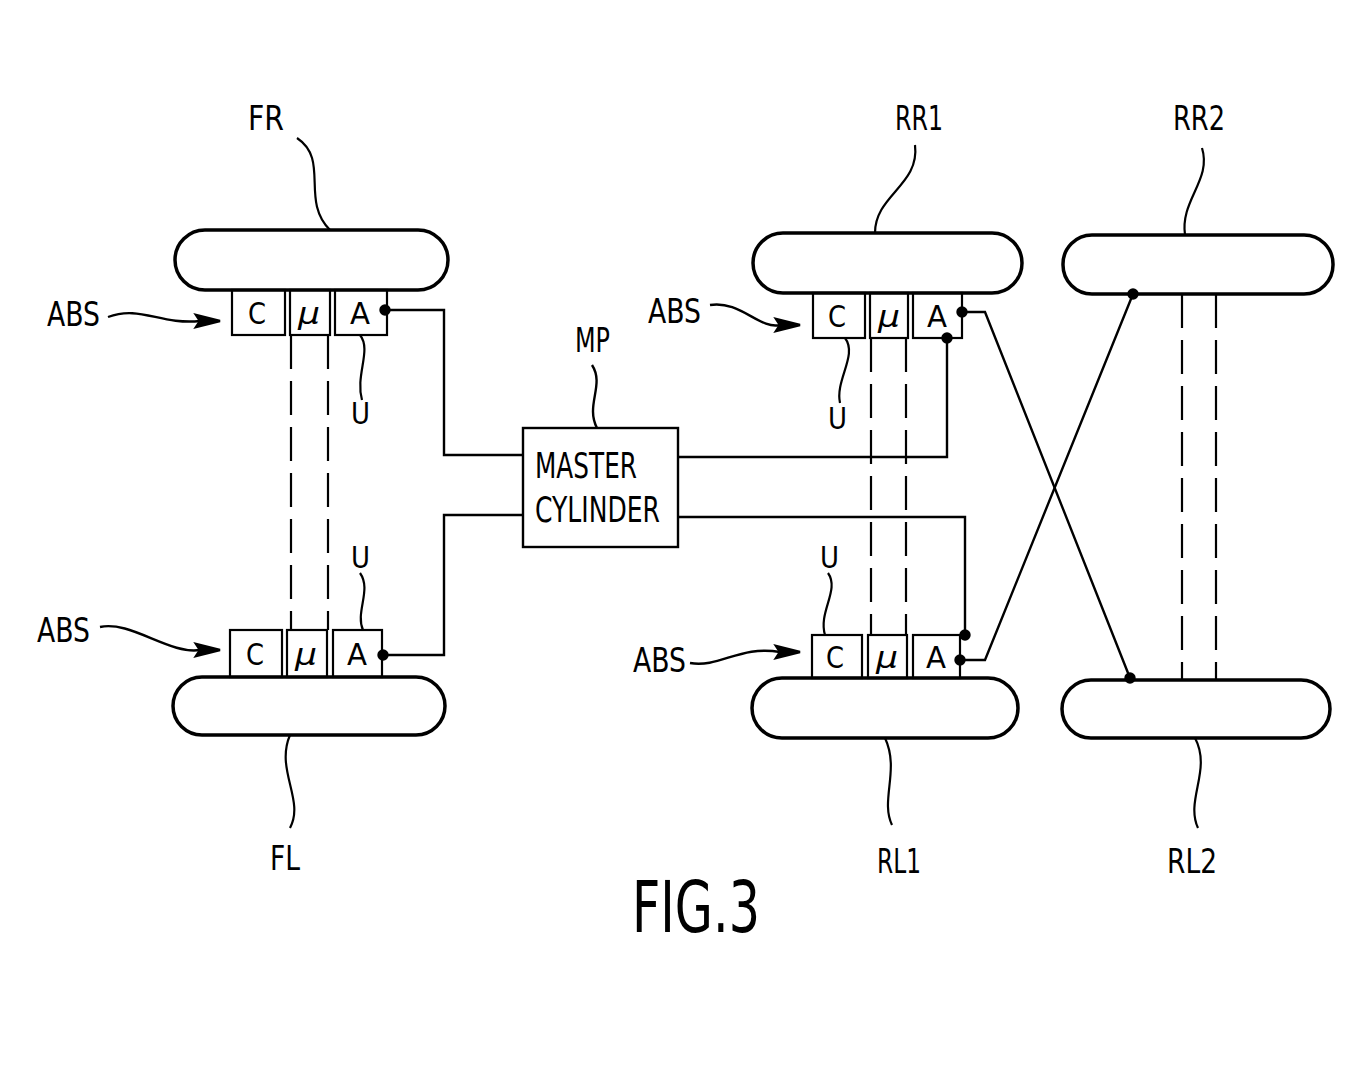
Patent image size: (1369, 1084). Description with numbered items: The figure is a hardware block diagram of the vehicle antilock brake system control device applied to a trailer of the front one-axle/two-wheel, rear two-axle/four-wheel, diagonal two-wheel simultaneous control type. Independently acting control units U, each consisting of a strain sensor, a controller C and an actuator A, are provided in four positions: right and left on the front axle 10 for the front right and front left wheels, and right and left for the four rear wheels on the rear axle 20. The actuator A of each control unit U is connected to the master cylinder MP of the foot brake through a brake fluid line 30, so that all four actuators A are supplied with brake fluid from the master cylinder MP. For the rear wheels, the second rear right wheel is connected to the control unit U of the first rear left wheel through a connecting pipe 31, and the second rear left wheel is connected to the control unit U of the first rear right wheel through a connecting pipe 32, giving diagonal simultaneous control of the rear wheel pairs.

The front axle 10 is at (300, 500).
The rear axle 20 is at (890, 487).
The brake fluid line 30 is at (444, 357).
The connecting pipe 31 is at (1077, 435).
The connecting pipe 32 is at (1000, 626).